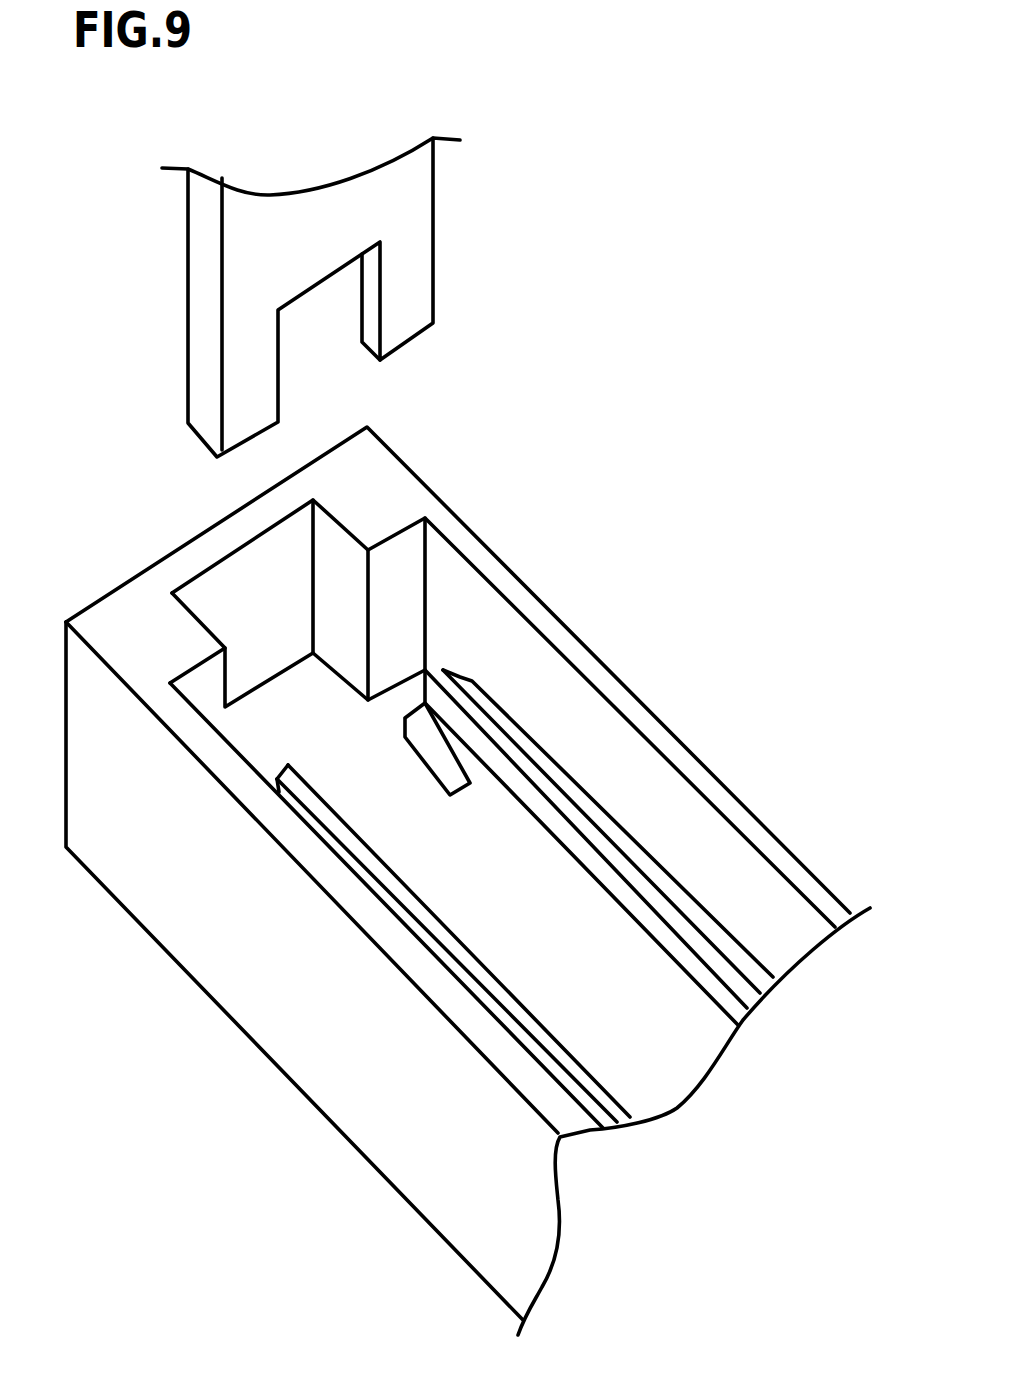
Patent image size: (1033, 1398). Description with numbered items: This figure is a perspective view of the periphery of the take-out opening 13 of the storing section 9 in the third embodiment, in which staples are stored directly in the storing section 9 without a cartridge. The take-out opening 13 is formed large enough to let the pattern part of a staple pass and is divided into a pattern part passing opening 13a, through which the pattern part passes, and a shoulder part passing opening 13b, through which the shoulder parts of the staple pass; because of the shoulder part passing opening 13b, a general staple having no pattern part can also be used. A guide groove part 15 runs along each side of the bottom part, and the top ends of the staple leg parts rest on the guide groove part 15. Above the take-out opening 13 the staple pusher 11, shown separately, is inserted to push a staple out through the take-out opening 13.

The storing section 9 is at (713, 645).
The staple pusher 11 is at (408, 292).
The take-out opening 13 is at (323, 693).
The pattern part passing opening 13a is at (310, 825).
The shoulder part passing opening 13b is at (400, 710).
The guide groove part 15 is at (640, 848).